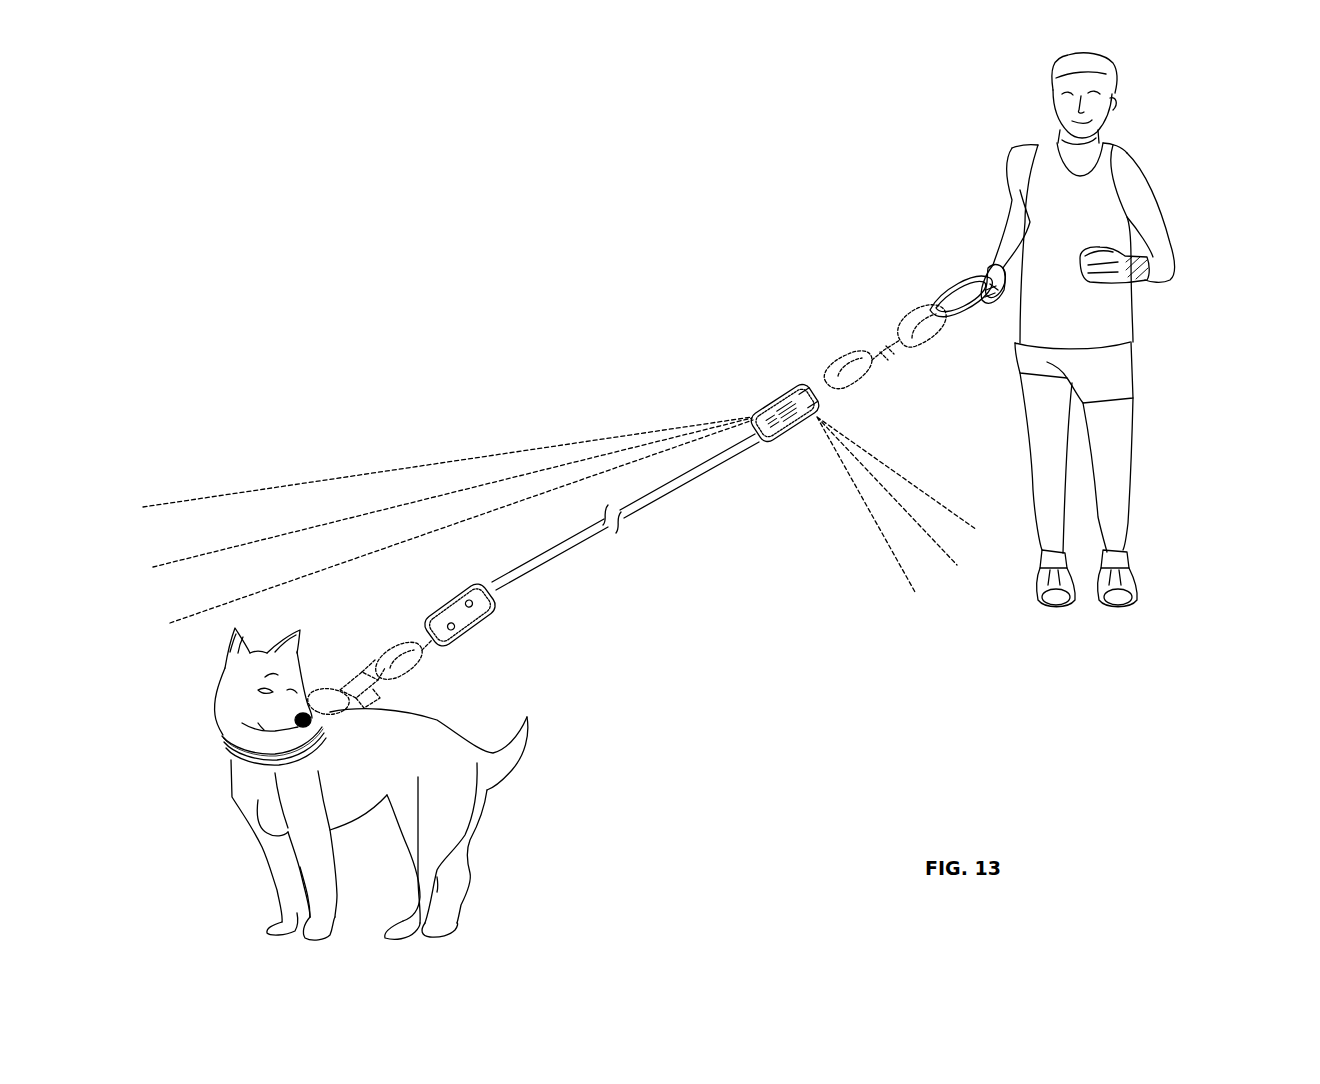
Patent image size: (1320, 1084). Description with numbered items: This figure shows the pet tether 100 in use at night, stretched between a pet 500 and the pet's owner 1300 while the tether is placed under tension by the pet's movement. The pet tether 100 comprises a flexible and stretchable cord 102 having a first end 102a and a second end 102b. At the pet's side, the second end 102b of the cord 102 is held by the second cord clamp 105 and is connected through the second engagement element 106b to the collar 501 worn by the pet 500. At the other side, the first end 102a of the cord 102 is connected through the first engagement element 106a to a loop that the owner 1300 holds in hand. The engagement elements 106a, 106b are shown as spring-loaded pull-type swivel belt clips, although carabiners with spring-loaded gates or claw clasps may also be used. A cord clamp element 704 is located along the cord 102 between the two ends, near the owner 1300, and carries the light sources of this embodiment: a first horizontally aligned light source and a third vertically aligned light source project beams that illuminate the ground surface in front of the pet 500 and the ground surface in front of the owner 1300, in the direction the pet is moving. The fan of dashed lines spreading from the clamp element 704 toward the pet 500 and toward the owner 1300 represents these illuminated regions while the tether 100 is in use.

The pet tether 100 is at (553, 230).
The flexible and stretchable cord 102 is at (582, 546).
The first end of the cord 102a is at (825, 397).
The second end of the cord 102b is at (415, 642).
The second cord clamp 105 is at (486, 621).
The first engagement element 106a is at (888, 330).
The second engagement element 106b is at (350, 680).
The pet 500 is at (424, 727).
The collar 501 is at (224, 748).
The swivel device 704 is at (788, 437).
The pet's owner 1300 is at (1142, 166).